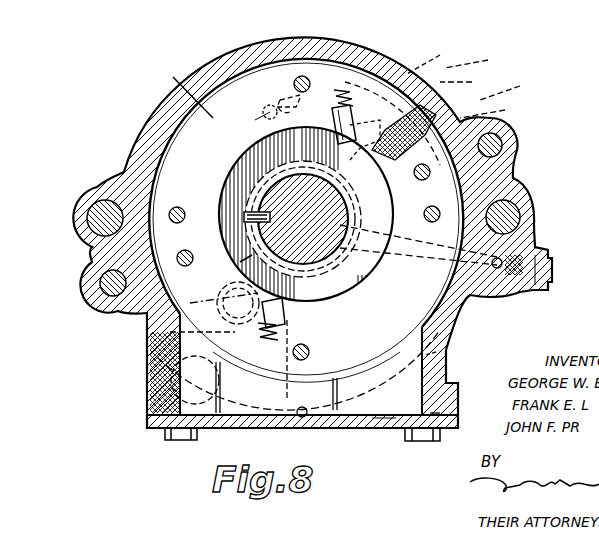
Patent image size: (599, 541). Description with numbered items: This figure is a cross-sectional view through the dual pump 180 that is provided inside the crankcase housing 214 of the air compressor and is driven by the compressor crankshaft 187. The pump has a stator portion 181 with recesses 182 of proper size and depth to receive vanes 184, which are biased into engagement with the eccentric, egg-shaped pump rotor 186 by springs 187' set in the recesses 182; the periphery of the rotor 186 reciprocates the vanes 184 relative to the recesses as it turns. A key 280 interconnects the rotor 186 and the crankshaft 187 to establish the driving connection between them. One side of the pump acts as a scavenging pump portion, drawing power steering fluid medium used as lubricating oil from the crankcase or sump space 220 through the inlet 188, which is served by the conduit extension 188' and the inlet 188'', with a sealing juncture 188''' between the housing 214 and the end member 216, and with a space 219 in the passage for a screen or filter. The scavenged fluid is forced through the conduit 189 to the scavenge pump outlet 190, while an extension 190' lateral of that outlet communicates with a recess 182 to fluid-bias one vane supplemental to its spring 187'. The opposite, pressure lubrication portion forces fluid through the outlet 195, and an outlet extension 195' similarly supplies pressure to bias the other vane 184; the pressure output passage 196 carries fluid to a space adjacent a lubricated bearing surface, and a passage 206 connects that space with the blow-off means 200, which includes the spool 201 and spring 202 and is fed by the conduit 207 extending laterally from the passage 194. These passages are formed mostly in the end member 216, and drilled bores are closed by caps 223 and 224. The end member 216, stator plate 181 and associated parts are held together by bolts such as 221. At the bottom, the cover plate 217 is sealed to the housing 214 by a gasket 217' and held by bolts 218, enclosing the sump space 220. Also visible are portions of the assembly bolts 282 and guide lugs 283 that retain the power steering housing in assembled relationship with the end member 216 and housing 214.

The dual pump 180 is at (182, 163).
The stator portion 181 is at (179, 92).
The recesses 182 is at (378, 88).
The vanes 184 is at (290, 258).
The eccentric pump rotor 186 is at (240, 170).
The compressor crankshaft 187 is at (219, 271).
The springs 187' is at (301, 215).
The inlet 188 is at (175, 367).
The conduit extension 188' is at (198, 440).
The inlet 188'' is at (324, 428).
The sealing juncture 188''' is at (135, 372).
The conduit 189 is at (253, 126).
The scavenge pump outlet 190 is at (368, 67).
The extension 190' is at (318, 80).
The conduit 194 is at (438, 59).
The outlet 195 is at (327, 317).
The outlet extension 195' is at (271, 360).
The conduit 196 is at (377, 223).
The blow-off means 200 is at (498, 90).
The spool 201 is at (406, 142).
The spring 202 is at (498, 107).
The passage 206 is at (363, 183).
The conduit 207 is at (482, 58).
The housing 214 is at (440, 370).
The end member 216 is at (436, 352).
The bottom cover plate 217 is at (379, 436).
The gasket 217' is at (430, 441).
The bolts 218 is at (166, 434).
The space 219 is at (212, 298).
The crankcase or sump space 220 is at (366, 403).
The bolts 221 is at (316, 73).
The cap 223 is at (552, 260).
The cap 224 is at (514, 85).
The key 280 is at (247, 217).
The assembly bolts 282 is at (102, 205).
The guide lugs 283 is at (108, 291).